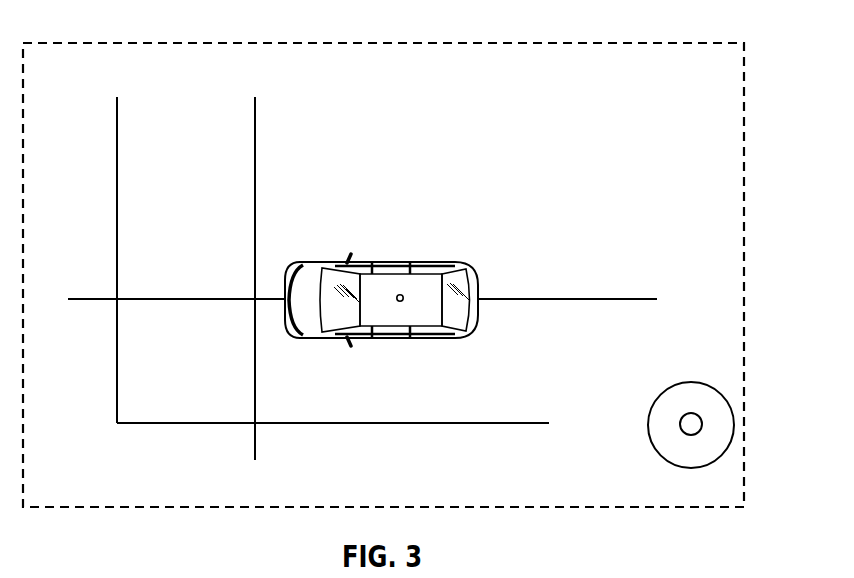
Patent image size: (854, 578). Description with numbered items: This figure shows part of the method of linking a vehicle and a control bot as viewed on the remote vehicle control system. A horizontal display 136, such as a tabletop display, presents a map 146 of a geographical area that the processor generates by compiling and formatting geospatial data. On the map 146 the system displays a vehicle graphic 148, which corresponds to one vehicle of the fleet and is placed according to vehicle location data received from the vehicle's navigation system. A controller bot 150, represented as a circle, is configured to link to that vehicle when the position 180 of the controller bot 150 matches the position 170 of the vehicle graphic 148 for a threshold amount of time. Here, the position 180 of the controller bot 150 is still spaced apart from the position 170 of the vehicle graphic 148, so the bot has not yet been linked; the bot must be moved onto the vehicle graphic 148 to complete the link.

The horizontal display 136 is at (709, 94).
The map 146 is at (184, 146).
The vehicle graphic 148 is at (478, 281).
The position of the vehicle graphic 170 is at (400, 294).
The controller bot 150 is at (652, 456).
The position of the controller bot 180 is at (697, 432).